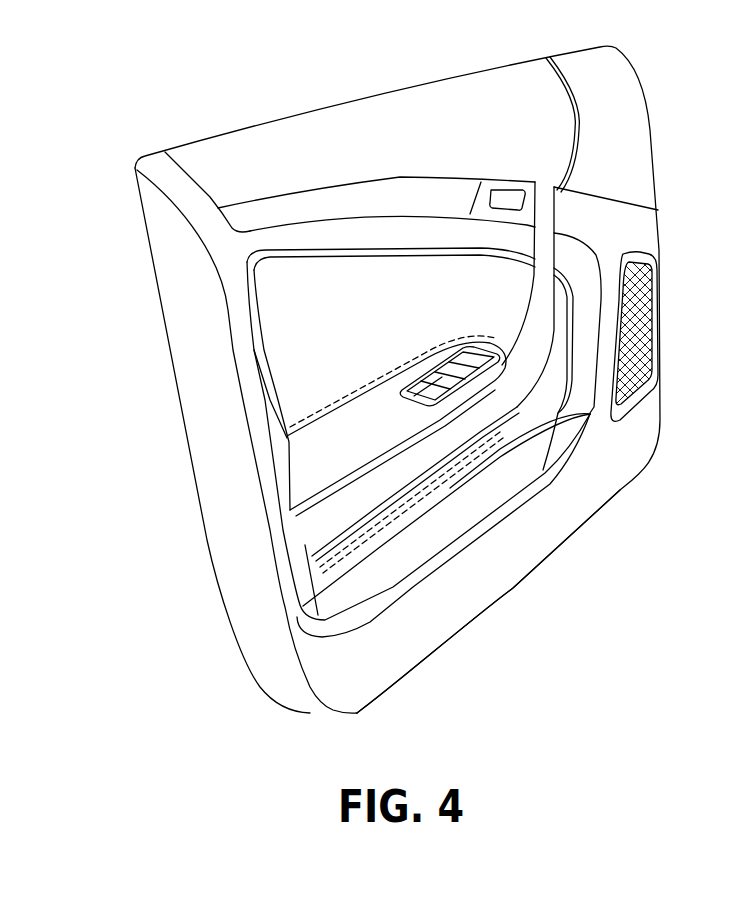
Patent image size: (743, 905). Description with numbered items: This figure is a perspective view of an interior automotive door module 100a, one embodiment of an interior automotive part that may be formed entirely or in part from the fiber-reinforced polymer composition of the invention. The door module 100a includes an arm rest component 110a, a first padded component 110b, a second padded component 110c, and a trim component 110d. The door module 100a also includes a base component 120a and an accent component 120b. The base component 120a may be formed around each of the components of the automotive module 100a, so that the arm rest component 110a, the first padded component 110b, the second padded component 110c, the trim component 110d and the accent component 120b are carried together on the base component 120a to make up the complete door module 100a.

The interior door module 100a is at (137, 80).
The arm rest component 110a is at (343, 445).
The first padded component 110b is at (327, 318).
The second padded component 110c is at (382, 126).
The trim component 110d is at (338, 204).
The base component 120a is at (440, 610).
The accent component 120b is at (601, 118).